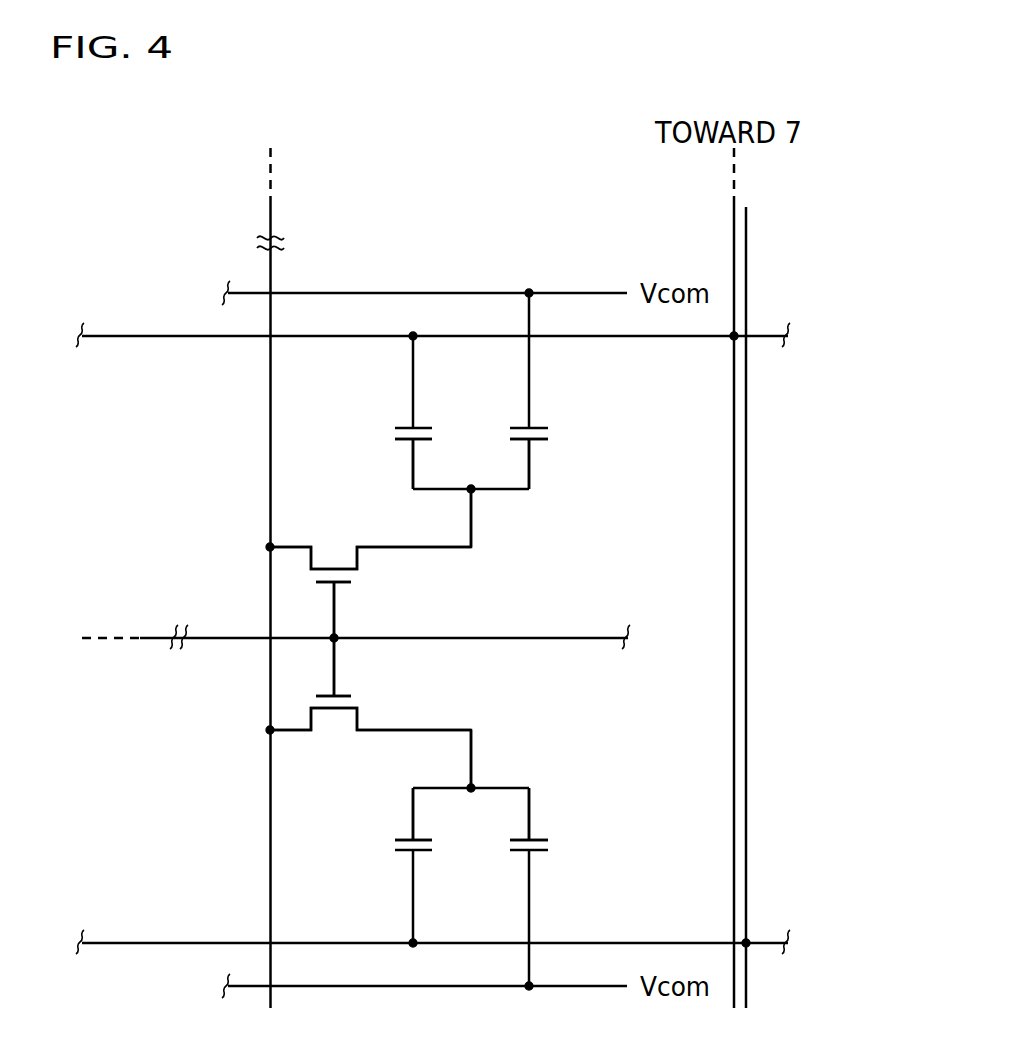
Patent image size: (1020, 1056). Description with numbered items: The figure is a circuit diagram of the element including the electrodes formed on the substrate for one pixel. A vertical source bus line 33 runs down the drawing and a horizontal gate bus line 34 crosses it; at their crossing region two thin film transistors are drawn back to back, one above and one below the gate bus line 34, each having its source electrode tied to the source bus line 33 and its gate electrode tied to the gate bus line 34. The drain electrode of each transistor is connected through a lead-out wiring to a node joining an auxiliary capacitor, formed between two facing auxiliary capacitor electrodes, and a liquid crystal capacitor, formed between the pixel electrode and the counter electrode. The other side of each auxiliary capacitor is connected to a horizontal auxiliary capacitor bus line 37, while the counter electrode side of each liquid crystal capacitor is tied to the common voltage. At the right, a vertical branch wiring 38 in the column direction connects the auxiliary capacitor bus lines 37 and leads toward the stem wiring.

The source bus line 33 is at (272, 273).
The gate bus line 34 is at (152, 638).
The auxiliary capacitor bus line 37 is at (195, 335).
The branch wiring 38 is at (747, 253).